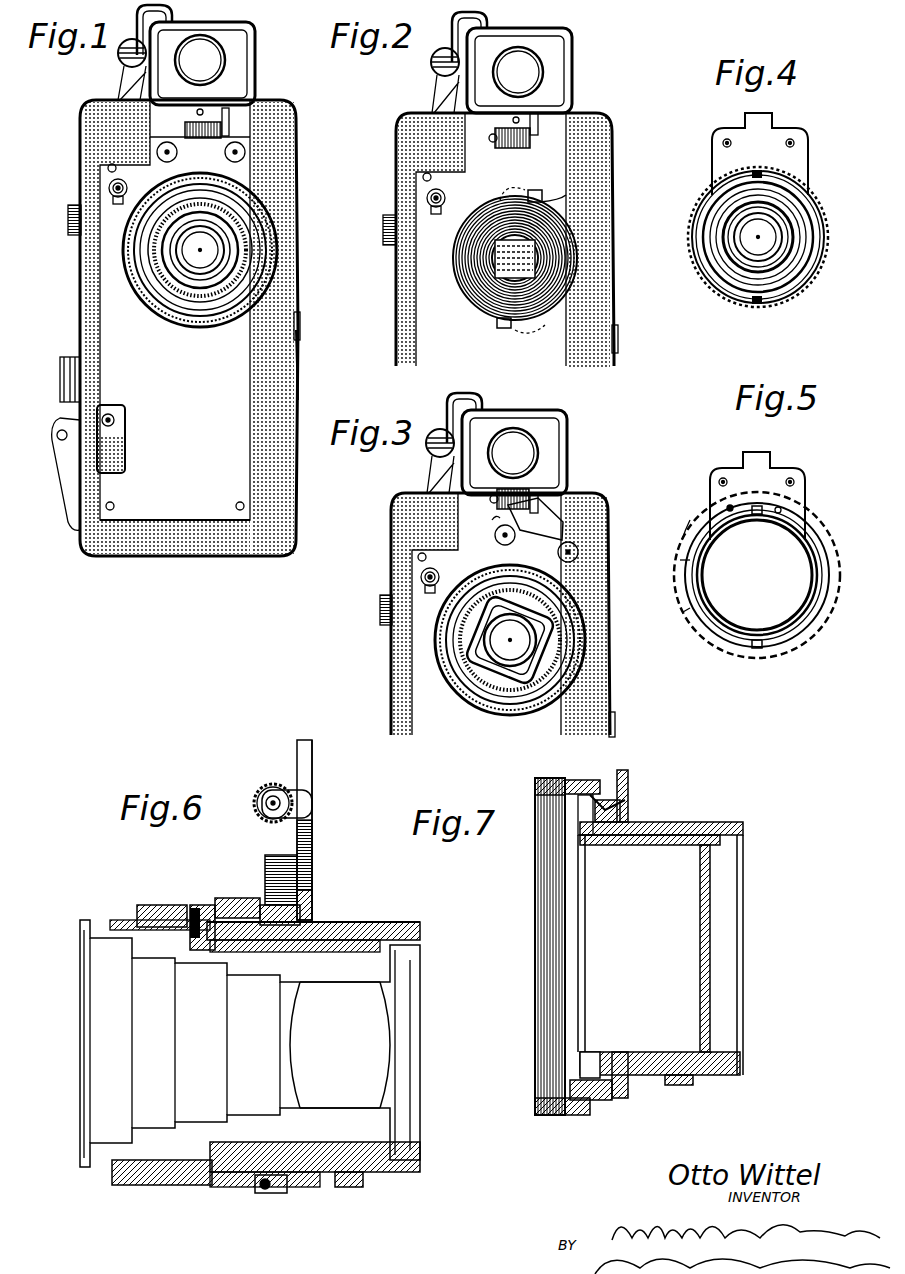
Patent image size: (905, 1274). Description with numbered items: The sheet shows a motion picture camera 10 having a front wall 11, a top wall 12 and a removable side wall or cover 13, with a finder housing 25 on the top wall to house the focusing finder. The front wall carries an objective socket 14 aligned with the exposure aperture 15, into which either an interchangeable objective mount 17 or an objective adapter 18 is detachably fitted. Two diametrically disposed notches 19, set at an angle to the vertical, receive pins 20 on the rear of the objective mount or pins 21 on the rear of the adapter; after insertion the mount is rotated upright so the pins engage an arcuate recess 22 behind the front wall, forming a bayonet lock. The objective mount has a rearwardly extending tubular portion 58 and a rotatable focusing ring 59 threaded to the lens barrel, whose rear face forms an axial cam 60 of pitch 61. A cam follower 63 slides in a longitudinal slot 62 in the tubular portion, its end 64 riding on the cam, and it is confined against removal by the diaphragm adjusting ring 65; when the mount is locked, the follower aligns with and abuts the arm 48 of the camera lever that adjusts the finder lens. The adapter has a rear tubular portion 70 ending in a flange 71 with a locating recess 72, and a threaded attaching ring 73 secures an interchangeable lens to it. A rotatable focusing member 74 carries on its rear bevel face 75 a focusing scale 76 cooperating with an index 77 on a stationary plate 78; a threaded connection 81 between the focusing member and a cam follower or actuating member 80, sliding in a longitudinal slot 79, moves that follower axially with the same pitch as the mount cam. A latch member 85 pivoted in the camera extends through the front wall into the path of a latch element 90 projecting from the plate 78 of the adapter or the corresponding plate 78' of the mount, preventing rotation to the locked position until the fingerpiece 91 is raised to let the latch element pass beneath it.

In FIG. 1, the motion picture camera 10 is at (300, 200).
In FIG. 2, the motion picture camera 10 is at (396, 158).
In FIG. 3, the motion picture camera 10 is at (391, 552).
In FIG. 1, the front wall 11 is at (165, 556).
In FIG. 2, the front wall 11 is at (396, 316).
In FIG. 3, the front wall 11 is at (391, 683).
In FIG. 1, the top wall 12 is at (255, 105).
In FIG. 2, the top wall 12 is at (572, 113).
In FIG. 3, the top wall 12 is at (568, 493).
In FIG. 1, the removable side wall or cover 13 is at (294, 388).
In FIG. 2, the removable side wall or cover 13 is at (614, 298).
In FIG. 3, the removable side wall or cover 13 is at (610, 680).
In FIG. 2, the objective socket 14 is at (466, 290).
In FIG. 2, the exposure aperture 15 is at (535, 262).
In FIG. 1, the interchangeable objective mount 17 is at (128, 283).
In FIG. 3, the interchangeable objective mount 17 is at (468, 710).
In FIG. 4, the interchangeable objective mount 17 is at (800, 300).
In FIG. 6, the interchangeable objective mount 17 is at (84, 930).
In FIG. 5, the objective adapter 18 is at (800, 650).
In FIG. 7, the objective adapter 18 is at (535, 960).
In FIG. 2, the notches 19 is at (538, 190).
In FIG. 4, the pins 20 is at (762, 174).
In FIG. 6, the pins 20 is at (352, 1187).
In FIG. 5, the pins 21 is at (762, 508).
In FIG. 7, the pins 21 is at (690, 1085).
In FIG. 2, the arcuate recess 22 is at (500, 190).
In FIG. 1, the finder housing 25 is at (250, 35).
In FIG. 2, the finder housing 25 is at (570, 40).
In FIG. 3, the finder housing 25 is at (565, 423).
In FIG. 2, the arm 48 is at (566, 195).
In FIG. 6, the rearwardly extending tubular portion 58 is at (420, 1165).
In FIG. 6, the rotatable focusing ring 59 is at (160, 905).
In FIG. 6, the axial cam 60 is at (262, 880).
In FIG. 6, the pitch of the cam 61 is at (312, 900).
In FIG. 6, the longitudinal slot 62 is at (420, 925).
In FIG. 4, the cam follower 63 is at (742, 180).
In FIG. 6, the cam follower 63 is at (380, 922).
In FIG. 6, the end of cam follower 64 is at (240, 898).
In FIG. 4, the diaphragm adjusting ring 65 is at (825, 212).
In FIG. 6, the diaphragm adjusting ring 65 is at (275, 1193).
In FIG. 7, the rear tubular portion 70 is at (740, 1068).
In FIG. 7, the flange 71 is at (578, 815).
In FIG. 7, the locating recess 72 is at (580, 1062).
In FIG. 7, the threaded attaching ring 73 is at (552, 1115).
In FIG. 5, the focusing member 74 is at (827, 625).
In FIG. 7, the focusing member 74 is at (600, 1100).
In FIG. 5, the rear bevel face 75 is at (683, 612).
In FIG. 7, the rear bevel face 75 is at (628, 778).
In FIG. 5, the focusing scale 76 is at (680, 560).
In FIG. 5, the index 77 is at (682, 540).
In FIG. 5, the stationary plate 78 is at (761, 488).
In FIG. 7, the stationary plate 78 is at (651, 1087).
In FIG. 1, the plate 78' is at (244, 155).
In FIG. 3, the plate 78' is at (569, 557).
In FIG. 4, the plate 78' is at (781, 150).
In FIG. 6, the plate 78' is at (327, 830).
In FIG. 7, the longitudinal slot 79 is at (743, 828).
In FIG. 5, the cam follower or actuating member 80 is at (757, 575).
In FIG. 7, the cam follower or actuating member 80 is at (690, 822).
In FIG. 7, the threaded connection 81 is at (620, 810).
In FIG. 1, the latch member 85 is at (222, 118).
In FIG. 2, the latch member 85 is at (538, 125).
In FIG. 3, the latch member 85 is at (538, 500).
In FIG. 6, the latch member 85 is at (296, 790).
In FIG. 3, the latch element 90 is at (548, 520).
In FIG. 4, the latch element 90 is at (745, 118).
In FIG. 5, the latch element 90 is at (745, 455).
In FIG. 6, the latch element 90 is at (312, 803).
In FIG. 1, the fingerpiece 91 is at (122, 108).
In FIG. 2, the fingerpiece 91 is at (505, 150).
In FIG. 3, the fingerpiece 91 is at (495, 493).
In FIG. 6, the fingerpiece 91 is at (262, 788).